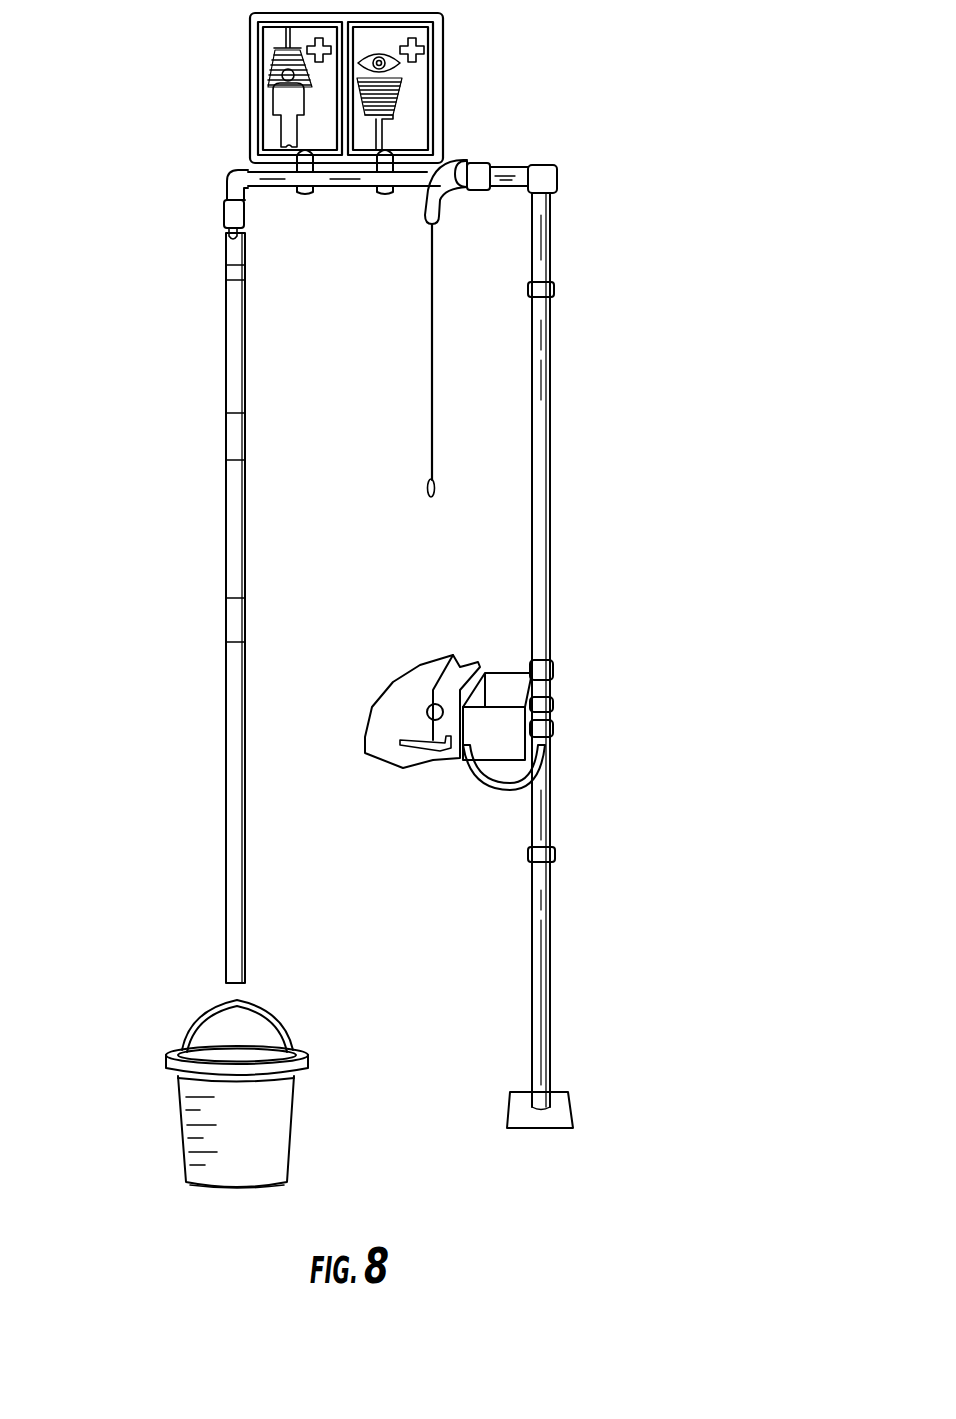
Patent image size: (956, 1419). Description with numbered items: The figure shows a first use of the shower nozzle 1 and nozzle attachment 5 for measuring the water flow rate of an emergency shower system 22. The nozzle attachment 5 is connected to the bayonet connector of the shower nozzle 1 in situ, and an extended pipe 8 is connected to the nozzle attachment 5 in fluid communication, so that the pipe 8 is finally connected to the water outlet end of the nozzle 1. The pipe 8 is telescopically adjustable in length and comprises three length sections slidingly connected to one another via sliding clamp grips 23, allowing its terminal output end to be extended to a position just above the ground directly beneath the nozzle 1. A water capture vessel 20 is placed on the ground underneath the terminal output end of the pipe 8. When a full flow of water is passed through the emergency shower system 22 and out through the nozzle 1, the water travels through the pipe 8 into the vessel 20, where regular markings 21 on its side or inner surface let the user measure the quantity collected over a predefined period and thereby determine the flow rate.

The shower nozzle 1 is at (246, 211).
The nozzle attachment 5 is at (226, 253).
The extended pipe 8 is at (237, 362).
The sliding clamp grips 23 is at (235, 442).
The emergency shower system 22 is at (552, 222).
The regular markings 21 is at (182, 1137).
The water capture vessel 20 is at (236, 1190).